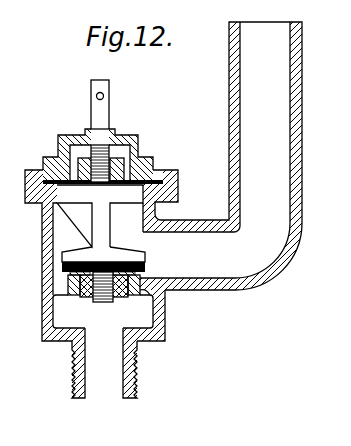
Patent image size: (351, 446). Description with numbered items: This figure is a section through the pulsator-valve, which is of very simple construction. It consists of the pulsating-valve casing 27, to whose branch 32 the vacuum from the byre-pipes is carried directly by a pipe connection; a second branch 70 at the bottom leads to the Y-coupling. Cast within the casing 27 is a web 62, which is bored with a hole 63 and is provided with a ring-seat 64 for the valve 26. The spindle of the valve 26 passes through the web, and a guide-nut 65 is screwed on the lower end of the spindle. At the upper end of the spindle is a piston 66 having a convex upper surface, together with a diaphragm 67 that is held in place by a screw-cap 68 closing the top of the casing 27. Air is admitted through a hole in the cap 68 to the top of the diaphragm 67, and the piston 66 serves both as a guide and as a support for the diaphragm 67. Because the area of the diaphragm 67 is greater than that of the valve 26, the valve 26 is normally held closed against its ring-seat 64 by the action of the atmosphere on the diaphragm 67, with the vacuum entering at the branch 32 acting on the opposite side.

The pulsator-valve 26 is at (60, 251).
The pulsating-valve casing 27 is at (45, 291).
The branch 32 is at (221, 156).
The web 62 is at (160, 310).
The hole 63 is at (80, 291).
The ring-seat 64 is at (141, 283).
The guide-nut 65 is at (110, 296).
The piston 66 is at (82, 199).
The diaphragm 67 is at (48, 166).
The screw-cap 68 is at (138, 141).
The branch 70 is at (104, 363).